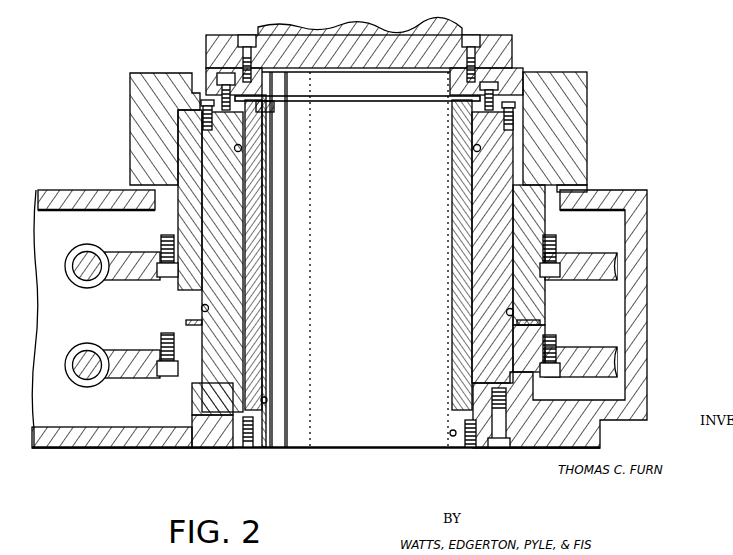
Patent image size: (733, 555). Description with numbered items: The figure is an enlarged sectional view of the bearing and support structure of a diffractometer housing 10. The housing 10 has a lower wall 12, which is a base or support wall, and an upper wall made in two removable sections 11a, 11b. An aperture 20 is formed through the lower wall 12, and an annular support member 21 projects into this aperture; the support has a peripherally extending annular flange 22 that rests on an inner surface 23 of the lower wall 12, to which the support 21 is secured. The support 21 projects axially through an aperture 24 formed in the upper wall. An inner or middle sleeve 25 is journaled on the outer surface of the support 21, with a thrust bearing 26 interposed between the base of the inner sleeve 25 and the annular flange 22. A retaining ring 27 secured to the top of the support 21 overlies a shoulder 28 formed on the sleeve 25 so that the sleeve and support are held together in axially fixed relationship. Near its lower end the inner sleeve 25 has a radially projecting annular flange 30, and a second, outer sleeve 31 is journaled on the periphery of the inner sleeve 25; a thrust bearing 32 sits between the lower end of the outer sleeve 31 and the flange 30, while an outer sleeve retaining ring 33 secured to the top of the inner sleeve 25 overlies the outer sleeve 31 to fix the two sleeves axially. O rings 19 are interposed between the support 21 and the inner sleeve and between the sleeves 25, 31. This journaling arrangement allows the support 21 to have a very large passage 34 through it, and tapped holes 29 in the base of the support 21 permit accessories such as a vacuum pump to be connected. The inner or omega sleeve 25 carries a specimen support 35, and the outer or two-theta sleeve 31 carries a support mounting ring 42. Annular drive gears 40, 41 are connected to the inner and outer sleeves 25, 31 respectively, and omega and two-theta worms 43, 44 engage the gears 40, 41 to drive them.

The diffractometer housing 10 is at (104, 447).
The upper wall section 11a is at (66, 190).
The upper wall section 11b is at (620, 190).
The lower wall 12 is at (528, 443).
The O rings 19 is at (241, 150).
The aperture 20 is at (477, 448).
The annular support member 21 is at (452, 435).
The annular flange 22 is at (200, 399).
The inner surface 23 is at (196, 430).
The aperture 24 is at (560, 184).
The inner sleeve 25 is at (472, 258).
The thrust bearing 26 is at (268, 401).
The retaining ring 27 is at (333, 110).
The shoulder 28 is at (262, 112).
The tapped holes 29 is at (250, 449).
The annular flange 30 is at (553, 331).
The outer sleeve 31 is at (527, 205).
The thrust bearing 32 is at (532, 322).
The outer sleeve retaining ring 33 is at (532, 75).
The passage 34 is at (351, 212).
The specimen support 35 is at (508, 47).
The omega drive gear 40 is at (120, 352).
The two-theta drive gear 41 is at (128, 240).
The support mounting ring 42 is at (578, 112).
The omega worm 43 is at (76, 348).
The two-theta worm 44 is at (76, 250).